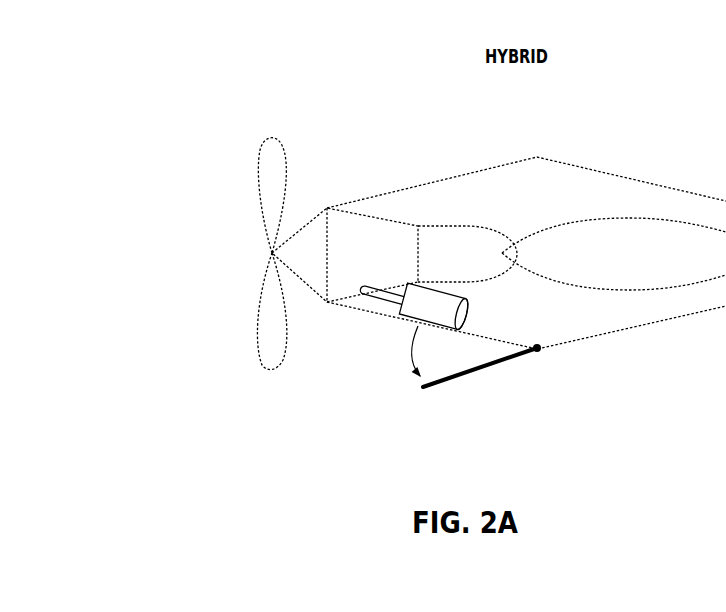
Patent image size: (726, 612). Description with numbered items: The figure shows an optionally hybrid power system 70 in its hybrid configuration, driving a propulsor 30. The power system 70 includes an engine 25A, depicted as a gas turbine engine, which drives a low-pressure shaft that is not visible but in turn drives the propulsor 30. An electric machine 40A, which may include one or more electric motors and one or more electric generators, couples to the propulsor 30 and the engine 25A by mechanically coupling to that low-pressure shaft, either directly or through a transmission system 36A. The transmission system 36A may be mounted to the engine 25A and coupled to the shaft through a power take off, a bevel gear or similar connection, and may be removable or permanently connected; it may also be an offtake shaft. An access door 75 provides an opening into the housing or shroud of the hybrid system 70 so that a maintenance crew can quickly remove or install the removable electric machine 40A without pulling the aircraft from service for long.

The hybrid power system 70 is at (468, 172).
The engine 25A is at (487, 223).
The transmission system 36A is at (388, 285).
The electric machine 40A is at (476, 316).
The access door 75 is at (438, 395).
The propulsor 30 is at (264, 375).